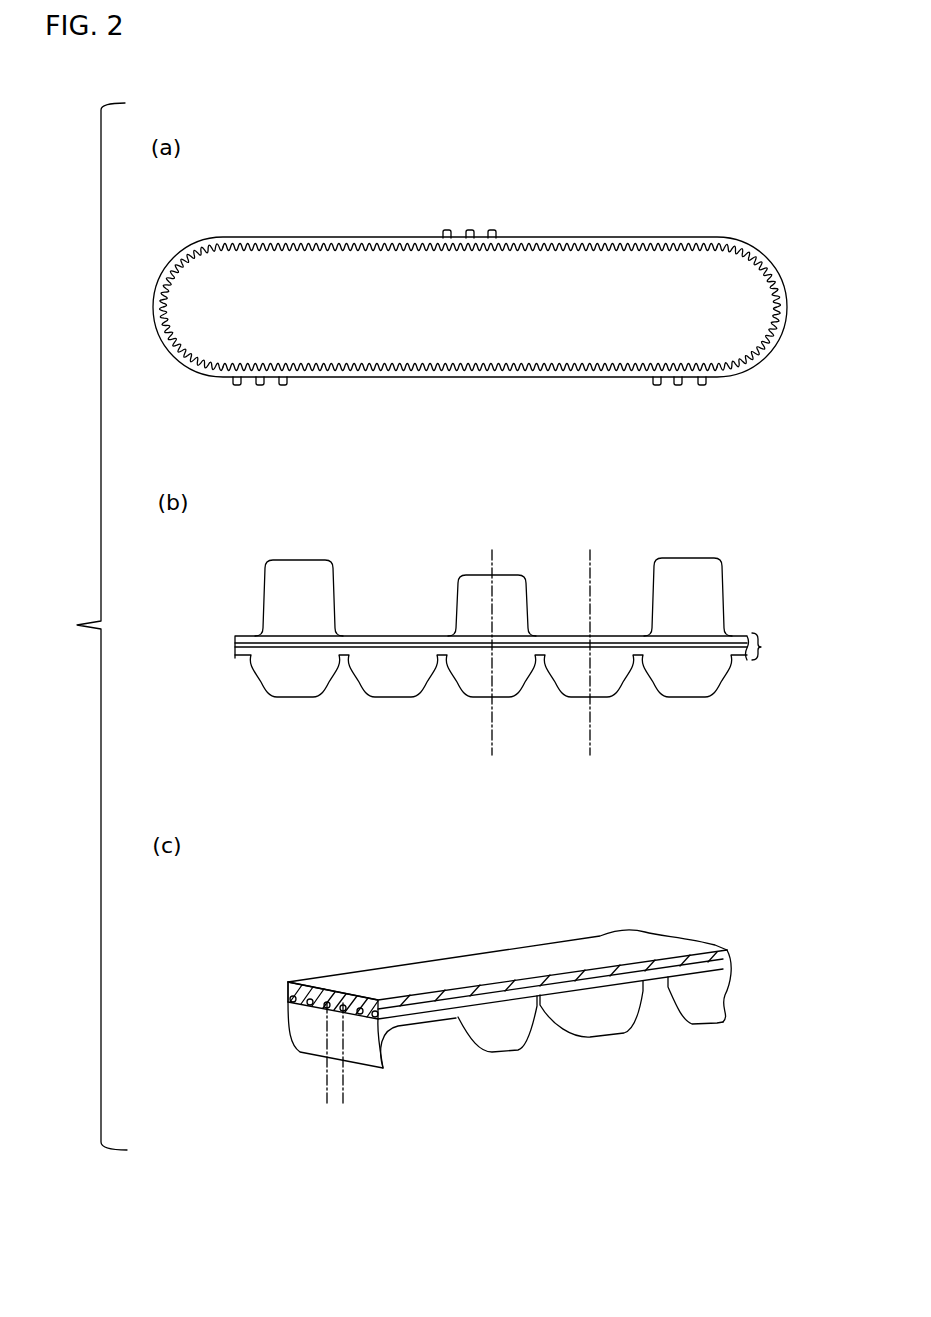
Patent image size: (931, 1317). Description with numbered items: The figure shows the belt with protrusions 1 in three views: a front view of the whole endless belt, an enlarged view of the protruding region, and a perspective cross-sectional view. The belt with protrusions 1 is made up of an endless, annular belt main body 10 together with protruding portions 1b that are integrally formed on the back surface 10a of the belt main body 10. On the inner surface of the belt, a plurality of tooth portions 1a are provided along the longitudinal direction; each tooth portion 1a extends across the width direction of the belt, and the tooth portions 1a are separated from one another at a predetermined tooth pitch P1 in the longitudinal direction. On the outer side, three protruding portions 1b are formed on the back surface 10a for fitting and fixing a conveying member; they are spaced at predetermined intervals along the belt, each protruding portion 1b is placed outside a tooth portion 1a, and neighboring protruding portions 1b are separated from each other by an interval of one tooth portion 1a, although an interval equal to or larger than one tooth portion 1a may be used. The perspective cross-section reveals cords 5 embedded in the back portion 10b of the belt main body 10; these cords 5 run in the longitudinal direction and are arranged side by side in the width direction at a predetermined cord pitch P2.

The belt with protrusions 1 is at (588, 182).
The tooth portions 1a is at (564, 251).
The protruding portions 1b is at (447, 230).
The cords 5 is at (236, 644).
The belt main body 10 is at (665, 238).
The back surface 10a is at (757, 248).
The back portion 10b is at (246, 978).
The tooth pitch P1 is at (492, 743).
The cord pitch P2 is at (302, 1090).